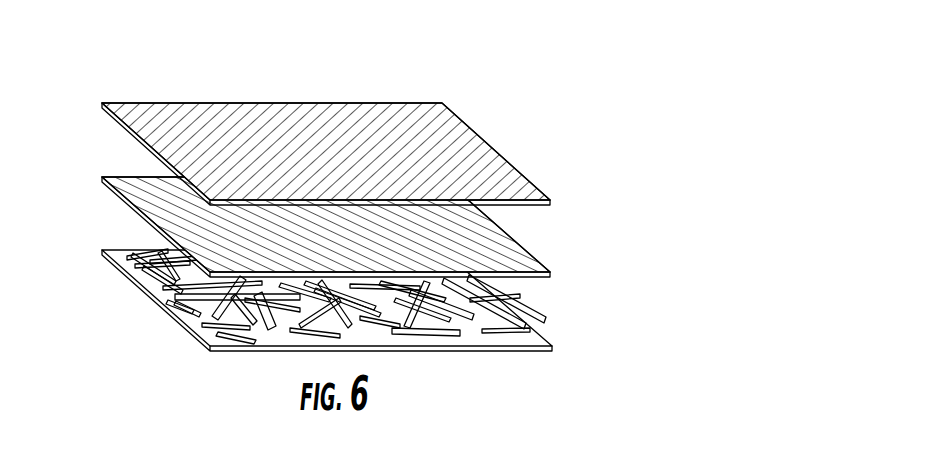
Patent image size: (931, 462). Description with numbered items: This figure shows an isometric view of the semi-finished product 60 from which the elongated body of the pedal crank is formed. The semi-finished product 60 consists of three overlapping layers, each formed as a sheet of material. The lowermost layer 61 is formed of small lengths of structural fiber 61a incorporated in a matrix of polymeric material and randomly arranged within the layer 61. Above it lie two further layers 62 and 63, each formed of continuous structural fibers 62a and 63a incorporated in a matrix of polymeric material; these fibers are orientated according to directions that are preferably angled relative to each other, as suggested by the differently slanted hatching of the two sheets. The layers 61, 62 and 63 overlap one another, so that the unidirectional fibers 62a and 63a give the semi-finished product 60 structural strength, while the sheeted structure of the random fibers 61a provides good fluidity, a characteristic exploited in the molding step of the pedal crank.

The semi-finished product 60 is at (304, 197).
The layer 61 is at (310, 302).
The structural fiber 61a is at (173, 284).
The layer 62 is at (298, 227).
The continuous structural fibers 62a is at (130, 185).
The layer 63 is at (311, 128).
The continuous structural fibers 63a is at (142, 110).